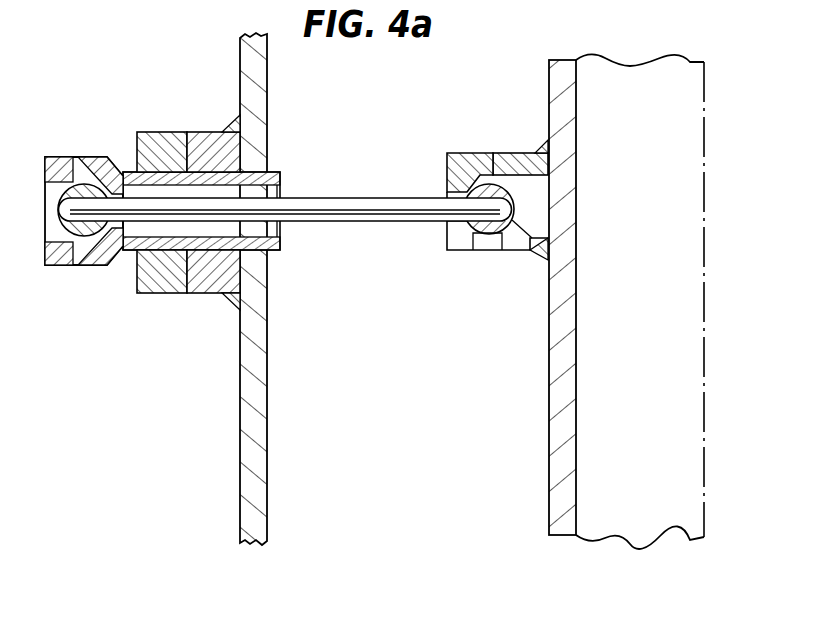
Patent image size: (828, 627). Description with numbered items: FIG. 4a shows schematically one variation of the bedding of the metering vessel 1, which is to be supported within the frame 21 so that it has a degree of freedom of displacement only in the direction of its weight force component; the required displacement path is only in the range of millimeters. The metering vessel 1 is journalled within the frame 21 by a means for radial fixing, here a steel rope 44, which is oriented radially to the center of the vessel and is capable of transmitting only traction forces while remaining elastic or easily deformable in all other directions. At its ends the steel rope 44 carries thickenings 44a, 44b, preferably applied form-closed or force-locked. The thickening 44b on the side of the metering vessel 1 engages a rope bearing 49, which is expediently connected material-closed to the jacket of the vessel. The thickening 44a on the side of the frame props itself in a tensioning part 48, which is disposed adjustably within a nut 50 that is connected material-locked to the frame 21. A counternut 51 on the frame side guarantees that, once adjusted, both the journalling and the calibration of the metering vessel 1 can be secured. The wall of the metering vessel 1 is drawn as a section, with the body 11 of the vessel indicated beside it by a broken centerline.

The metering vessel 1 is at (565, 442).
The body 11 is at (670, 222).
The frame 21 is at (243, 387).
The steel rope 44 is at (352, 200).
The thickening 44a is at (87, 263).
The thickening 44b is at (495, 152).
The tensioning part 48 is at (72, 168).
The rope bearing 49 is at (458, 152).
The nut 50 is at (203, 143).
The counternut 51 is at (163, 143).